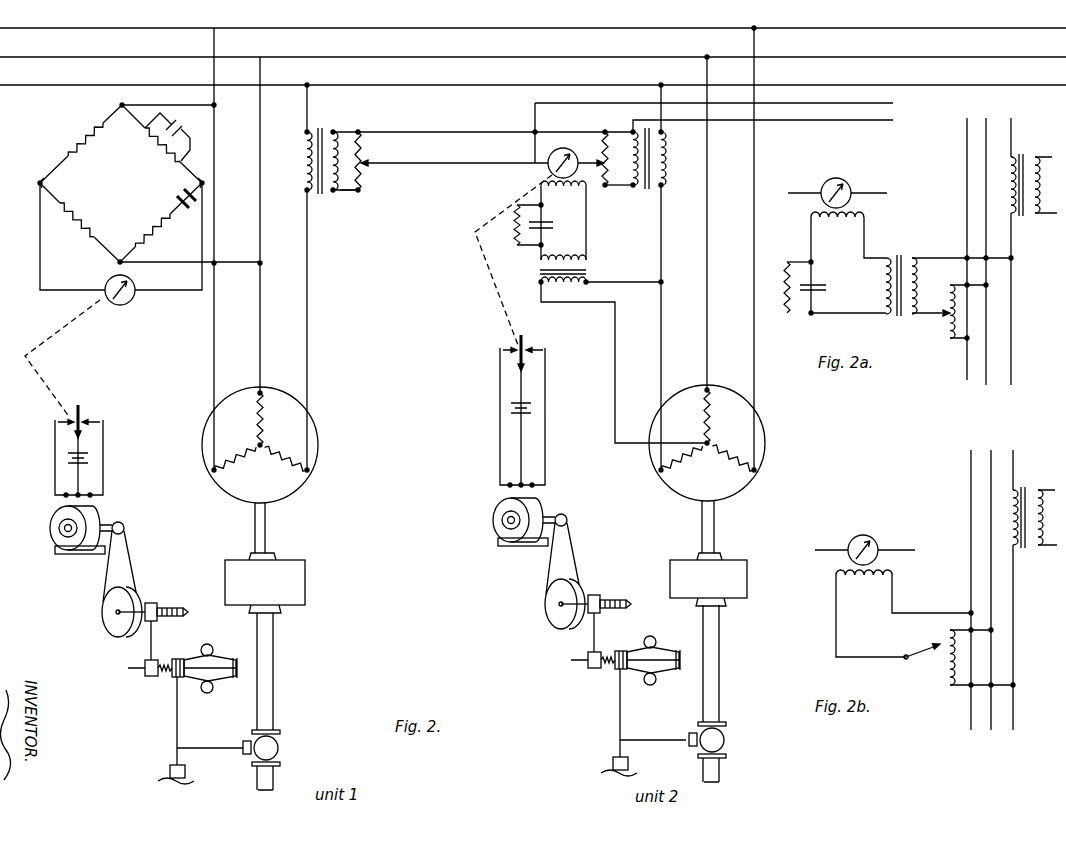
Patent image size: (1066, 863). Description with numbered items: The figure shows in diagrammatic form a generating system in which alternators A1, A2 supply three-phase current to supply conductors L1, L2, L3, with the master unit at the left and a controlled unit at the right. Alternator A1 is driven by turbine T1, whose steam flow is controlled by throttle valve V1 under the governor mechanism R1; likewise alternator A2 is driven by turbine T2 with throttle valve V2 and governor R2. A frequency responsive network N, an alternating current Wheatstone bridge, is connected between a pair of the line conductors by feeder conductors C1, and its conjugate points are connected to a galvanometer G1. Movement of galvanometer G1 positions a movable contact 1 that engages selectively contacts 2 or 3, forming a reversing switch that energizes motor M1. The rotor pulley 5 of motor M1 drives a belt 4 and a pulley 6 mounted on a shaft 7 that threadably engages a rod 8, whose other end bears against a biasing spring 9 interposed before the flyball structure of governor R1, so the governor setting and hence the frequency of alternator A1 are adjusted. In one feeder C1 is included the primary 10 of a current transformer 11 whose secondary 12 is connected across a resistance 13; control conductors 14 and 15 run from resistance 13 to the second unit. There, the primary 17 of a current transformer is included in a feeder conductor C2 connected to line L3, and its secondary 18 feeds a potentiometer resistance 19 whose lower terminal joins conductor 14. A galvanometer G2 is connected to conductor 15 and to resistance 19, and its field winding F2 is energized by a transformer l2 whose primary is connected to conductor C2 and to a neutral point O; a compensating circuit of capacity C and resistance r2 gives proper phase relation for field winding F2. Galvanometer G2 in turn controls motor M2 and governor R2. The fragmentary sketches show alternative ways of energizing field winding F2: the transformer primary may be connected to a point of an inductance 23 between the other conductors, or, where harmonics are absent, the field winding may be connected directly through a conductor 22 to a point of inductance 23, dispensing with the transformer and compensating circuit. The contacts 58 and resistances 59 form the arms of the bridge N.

In FIG. 2, the supply conductor L1 is at (533, 19).
In FIG. 2A, the supply conductor L1 is at (967, 386).
In FIG. 2B, the supply conductor L1 is at (971, 732).
In FIG. 2, the supply conductor L2 is at (533, 47).
In FIG. 2A, the supply conductor L2 is at (982, 268).
In FIG. 2B, the supply conductor L2 is at (983, 612).
In FIG. 2, the supply conductor L3 is at (533, 75).
In FIG. 2A, the supply conductor L3 is at (1013, 266).
In FIG. 2B, the supply conductor L3 is at (1016, 603).
In FIG. 2, the frequency responsive network N is at (100, 154).
In FIG. 2, the contact 58 is at (38, 181).
In FIG. 2, the resistance 59 is at (121, 216).
In FIG. 2, the feeder conductor C1 is at (318, 300).
In FIG. 2, the galvanometer G1 is at (109, 292).
In FIG. 2, the primary 10 is at (301, 178).
In FIG. 2, the current transformer 11 is at (328, 134).
In FIG. 2, the secondary 12 is at (340, 192).
In FIG. 2, the resistance 13 is at (367, 140).
In FIG. 2, the conductor 14 is at (458, 132).
In FIG. 2, the conductor 15 is at (452, 165).
In FIG. 2, the galvanometer G2 is at (561, 148).
In FIG. 2A, the galvanometer G2 is at (840, 182).
In FIG. 2B, the galvanometer G2 is at (866, 538).
In FIG. 2, the primary 17 is at (663, 165).
In FIG. 2A, the primary 17 is at (1013, 155).
In FIG. 2B, the primary 17 is at (1010, 488).
In FIG. 2, the secondary 18 is at (627, 146).
In FIG. 2A, the secondary 18 is at (1040, 158).
In FIG. 2B, the secondary 18 is at (1038, 490).
In FIG. 2, the potentiometer resistance 19 is at (616, 188).
In FIG. 2, the feeder conductor C2 is at (709, 155).
In FIG. 2, the field winding F2 is at (563, 220).
In FIG. 2A, the field winding F2 is at (848, 262).
In FIG. 2B, the field winding F2 is at (904, 614).
In FIG. 2, the resistance r2 is at (515, 225).
In FIG. 2A, the resistance r2 is at (786, 264).
In FIG. 2, the capacity C is at (551, 230).
In FIG. 2A, the capacity C is at (818, 287).
In FIG. 2, the transformer l2 is at (590, 272).
In FIG. 2A, the transformer l2 is at (900, 258).
In FIG. 2, the movable contact 1 is at (80, 412).
In FIG. 2, the contact 2 is at (105, 428).
In FIG. 2, the contact 3 is at (54, 420).
In FIG. 2, the motor M1 is at (100, 514).
In FIG. 2, the motor M2 is at (548, 505).
In FIG. 2, the belt 4 is at (138, 555).
In FIG. 2, the rotor pulley 5 is at (130, 525).
In FIG. 2, the pulley 6 is at (108, 625).
In FIG. 2, the shaft 7 is at (170, 605).
In FIG. 2, the rod 8 is at (157, 645).
In FIG. 2, the biasing spring 9 is at (163, 678).
In FIG. 2, the governor mechanism R1 is at (213, 652).
In FIG. 2, the governor mechanism R2 is at (652, 635).
In FIG. 2, the alternator A1 is at (322, 425).
In FIG. 2, the alternator A2 is at (768, 422).
In FIG. 2, the neutral point O is at (712, 445).
In FIG. 2, the turbine T1 is at (297, 576).
In FIG. 2, the turbine T2 is at (744, 563).
In FIG. 2, the throttle valve V1 is at (280, 745).
In FIG. 2, the throttle valve V2 is at (725, 740).
In FIG. 2B, the conductor 22 is at (1014, 588).
In FIG. 2A, the inductance 23 is at (948, 340).
In FIG. 2B, the inductance 23 is at (946, 686).